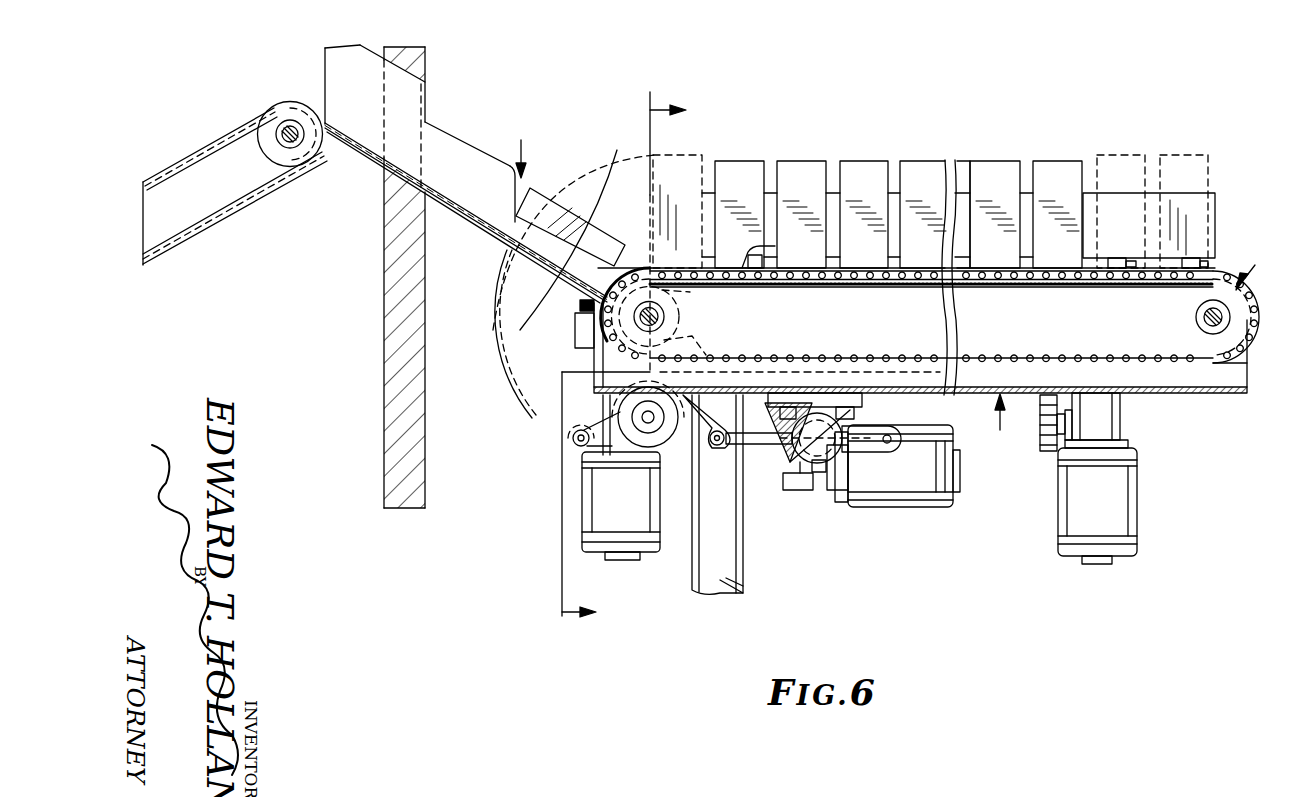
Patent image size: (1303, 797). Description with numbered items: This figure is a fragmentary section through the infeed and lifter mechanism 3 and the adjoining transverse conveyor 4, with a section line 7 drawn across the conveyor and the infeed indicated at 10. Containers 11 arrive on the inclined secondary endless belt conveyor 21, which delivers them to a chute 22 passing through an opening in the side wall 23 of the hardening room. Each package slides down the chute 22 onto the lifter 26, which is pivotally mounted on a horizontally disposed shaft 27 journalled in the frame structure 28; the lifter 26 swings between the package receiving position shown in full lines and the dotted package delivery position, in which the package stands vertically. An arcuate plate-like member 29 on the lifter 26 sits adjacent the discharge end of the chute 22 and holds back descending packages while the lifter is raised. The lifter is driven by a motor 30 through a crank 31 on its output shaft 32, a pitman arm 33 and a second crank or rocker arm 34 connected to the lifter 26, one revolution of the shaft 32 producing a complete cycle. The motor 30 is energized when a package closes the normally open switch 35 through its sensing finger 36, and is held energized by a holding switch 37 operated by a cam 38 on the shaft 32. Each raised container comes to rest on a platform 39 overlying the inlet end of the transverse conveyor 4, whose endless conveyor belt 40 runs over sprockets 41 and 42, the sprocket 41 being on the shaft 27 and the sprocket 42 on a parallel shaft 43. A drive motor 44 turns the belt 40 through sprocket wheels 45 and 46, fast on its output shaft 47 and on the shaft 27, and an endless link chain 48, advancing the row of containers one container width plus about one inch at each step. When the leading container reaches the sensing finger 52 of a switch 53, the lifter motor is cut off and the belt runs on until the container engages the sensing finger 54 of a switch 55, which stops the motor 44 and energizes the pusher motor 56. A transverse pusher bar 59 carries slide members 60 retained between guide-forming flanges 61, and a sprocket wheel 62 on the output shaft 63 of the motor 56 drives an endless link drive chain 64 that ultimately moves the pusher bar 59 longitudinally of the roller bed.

The infeed and lifter mechanism 3 is at (522, 148).
The transverse conveyor 4 is at (1252, 266).
The section line 7- 7 is at (617, 364).
The feed conveyor 10 is at (183, 160).
The containers 11 is at (538, 196).
The secondary endless belt conveyor 21 is at (153, 180).
The chute 22 is at (466, 148).
The side wall 23 is at (386, 318).
The lifter 26 is at (628, 172).
The horizontally disposed shaft 27 is at (660, 318).
The frame structure 28 is at (994, 417).
The arcuate plate-like member 29 is at (494, 322).
The motor 30 is at (893, 466).
The crank 31 is at (872, 428).
The output shaft 32 is at (822, 392).
The pitman arm 33 is at (766, 445).
The rocker arm 34 is at (580, 432).
The normally open switch 35 is at (576, 322).
The package engaging sensing finger 36 is at (602, 275).
The holding switch 37 is at (794, 492).
The cam 38 is at (812, 462).
The platform 39 is at (657, 270).
The endless conveyor belt 40 is at (1032, 286).
The sprocket 41 is at (672, 302).
The sprocket 42 is at (1172, 308).
The shaft 43 is at (1200, 322).
The drive motor 44 is at (621, 506).
The sprocket wheel 45 is at (642, 432).
The sprocket wheel 46 is at (690, 326).
The output shaft 47 is at (645, 422).
The endless link chain 48 is at (690, 346).
The sensing finger 52 is at (1132, 262).
The stop block 53 is at (1120, 258).
The sensing finger 54 is at (1208, 262).
The switch 55 is at (1198, 256).
The pusher motor 56 is at (1106, 518).
The transverse pusher bar 59 is at (1214, 196).
The slide members 60 is at (766, 244).
The guide-forming flanges 61 is at (768, 264).
The sprocket wheel 62 is at (1052, 434).
The drive shaft 63 is at (1068, 424).
The endless link drive chain 64 is at (1042, 422).